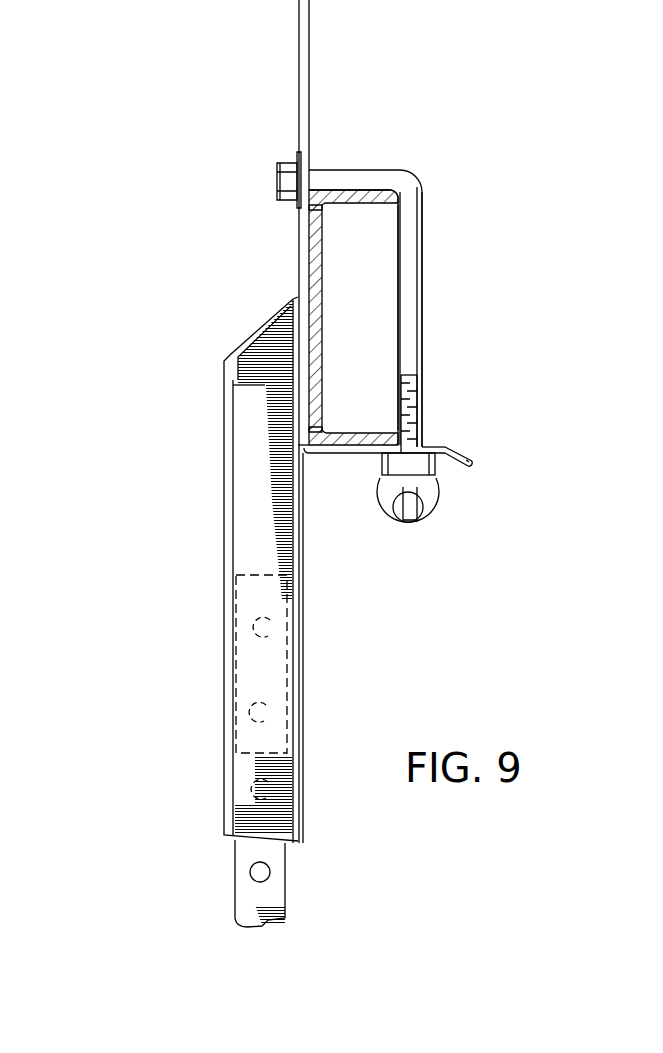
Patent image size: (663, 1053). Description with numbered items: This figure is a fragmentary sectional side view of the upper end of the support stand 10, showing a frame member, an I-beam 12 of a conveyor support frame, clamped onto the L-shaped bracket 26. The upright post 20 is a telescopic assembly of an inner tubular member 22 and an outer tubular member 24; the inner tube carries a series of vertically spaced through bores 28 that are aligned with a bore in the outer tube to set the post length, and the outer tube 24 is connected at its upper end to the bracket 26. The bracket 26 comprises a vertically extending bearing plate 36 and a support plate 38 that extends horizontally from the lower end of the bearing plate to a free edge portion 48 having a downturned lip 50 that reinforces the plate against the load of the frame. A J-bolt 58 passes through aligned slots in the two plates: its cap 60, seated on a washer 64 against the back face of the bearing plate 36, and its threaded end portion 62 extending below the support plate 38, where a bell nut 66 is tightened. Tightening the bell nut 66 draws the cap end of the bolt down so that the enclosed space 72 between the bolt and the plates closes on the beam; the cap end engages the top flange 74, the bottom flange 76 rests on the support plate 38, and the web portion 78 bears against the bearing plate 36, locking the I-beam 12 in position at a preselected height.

The support stand 10 is at (192, 122).
The I-beam 12 is at (305, 258).
The upright post 20 is at (204, 591).
The inner tubular member 22 is at (246, 848).
The outer tubular member 24 is at (223, 725).
The L-shaped bracket 26 is at (372, 100).
The through bores 28 is at (282, 625).
The bearing plate 36 is at (300, 60).
The support plate 38 is at (330, 458).
The free edge portion 48 is at (460, 445).
The downturned lip 50 is at (478, 464).
The J-bolt 58 is at (425, 215).
The cap 60 is at (277, 183).
The threaded end portion 62 is at (408, 378).
The washer 64 is at (296, 156).
The bell nut 66 is at (440, 528).
The enclosed space 72 is at (372, 275).
The top flange 74 is at (340, 200).
The bottom flange 76 is at (333, 424).
The web portion 78 is at (313, 318).